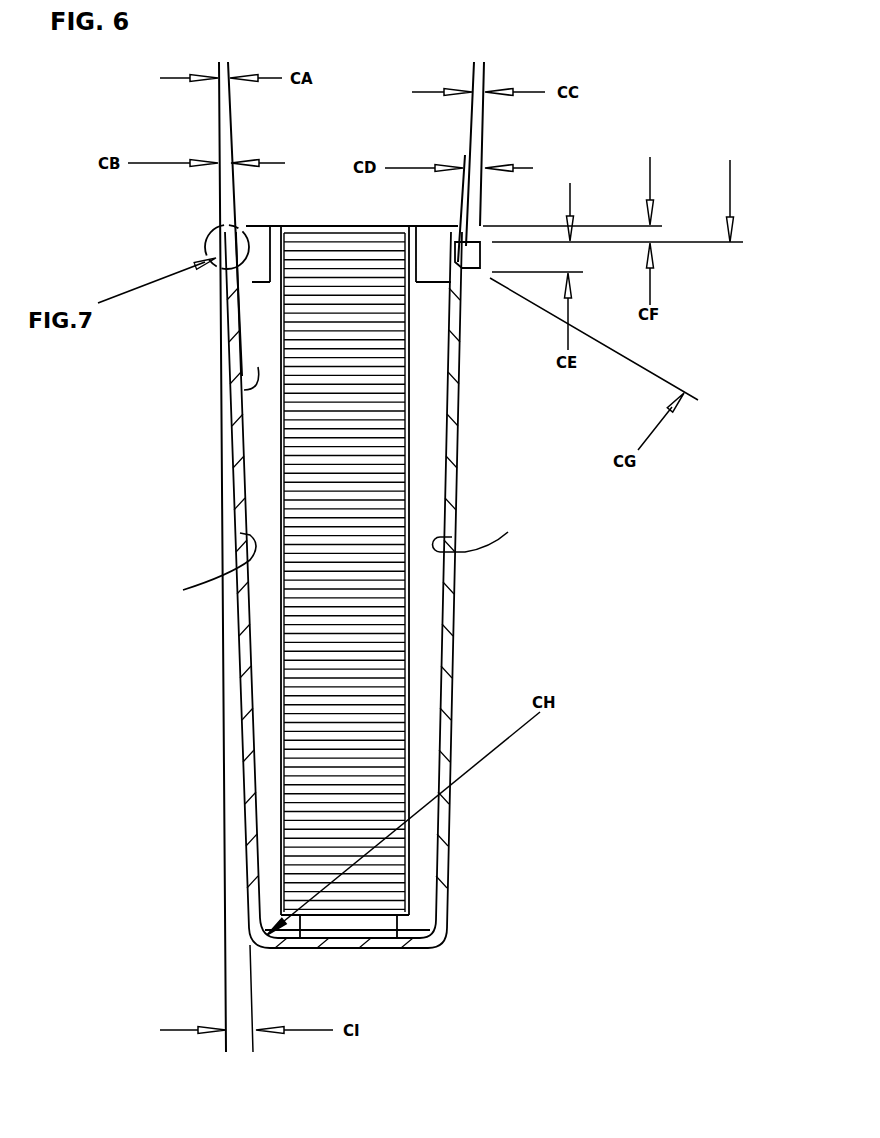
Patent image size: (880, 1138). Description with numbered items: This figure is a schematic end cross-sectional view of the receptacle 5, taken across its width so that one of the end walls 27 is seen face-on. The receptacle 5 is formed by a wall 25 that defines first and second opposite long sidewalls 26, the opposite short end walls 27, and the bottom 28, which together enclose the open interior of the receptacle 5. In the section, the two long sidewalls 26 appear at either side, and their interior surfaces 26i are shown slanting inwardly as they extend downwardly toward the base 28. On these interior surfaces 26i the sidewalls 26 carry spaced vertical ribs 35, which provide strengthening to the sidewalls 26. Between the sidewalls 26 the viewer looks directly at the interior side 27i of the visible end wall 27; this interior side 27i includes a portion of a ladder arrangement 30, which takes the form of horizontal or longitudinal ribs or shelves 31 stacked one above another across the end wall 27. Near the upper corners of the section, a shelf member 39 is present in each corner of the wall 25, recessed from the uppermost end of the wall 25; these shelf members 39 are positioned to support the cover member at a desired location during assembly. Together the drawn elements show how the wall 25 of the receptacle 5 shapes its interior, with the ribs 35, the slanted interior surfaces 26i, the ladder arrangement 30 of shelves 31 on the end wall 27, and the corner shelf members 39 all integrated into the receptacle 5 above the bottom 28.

The receptacle 5 is at (452, 692).
The wall 25 is at (470, 613).
The long sidewalls 26 is at (455, 508).
The interior surface of sidewalls 26i is at (348, 562).
The end wall 27 is at (400, 590).
The interior side of end wall 27i is at (380, 467).
The bottom 28 is at (363, 948).
The ladder arrangement 30 is at (297, 408).
The horizontal ribs or shelves 31 is at (322, 265).
The vertical ribs 35 is at (447, 400).
The shelf member 39 is at (253, 281).